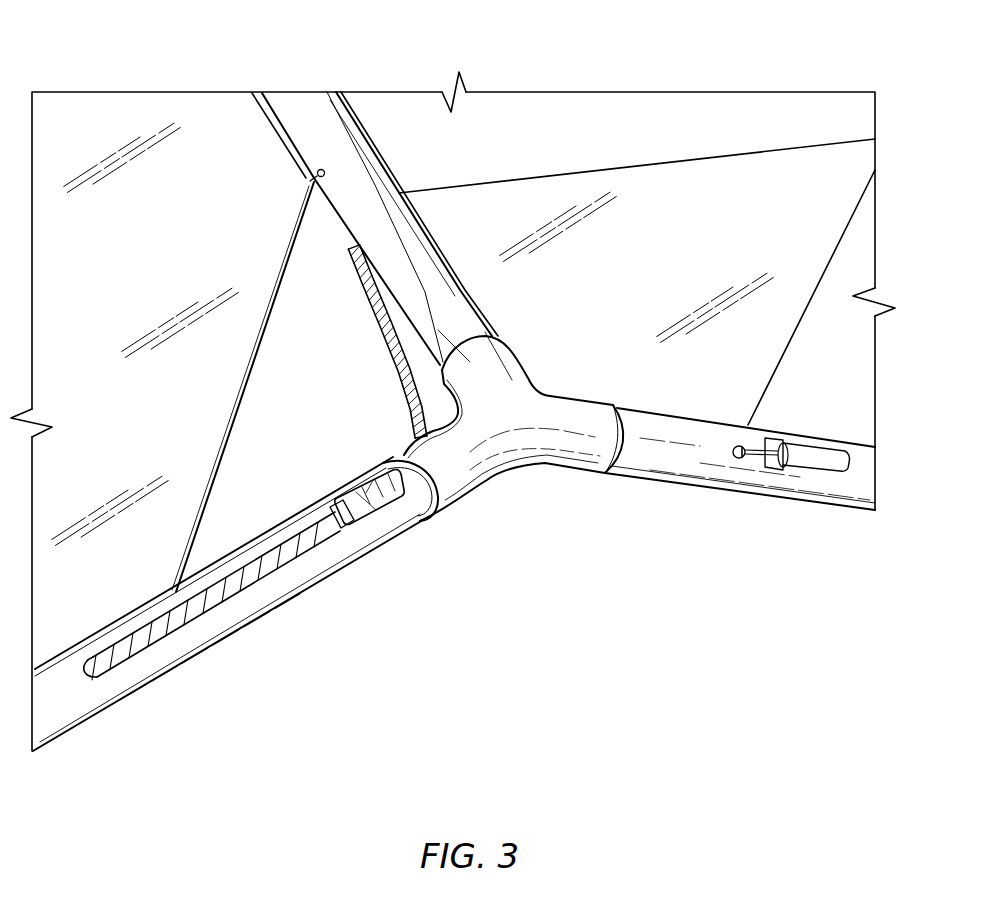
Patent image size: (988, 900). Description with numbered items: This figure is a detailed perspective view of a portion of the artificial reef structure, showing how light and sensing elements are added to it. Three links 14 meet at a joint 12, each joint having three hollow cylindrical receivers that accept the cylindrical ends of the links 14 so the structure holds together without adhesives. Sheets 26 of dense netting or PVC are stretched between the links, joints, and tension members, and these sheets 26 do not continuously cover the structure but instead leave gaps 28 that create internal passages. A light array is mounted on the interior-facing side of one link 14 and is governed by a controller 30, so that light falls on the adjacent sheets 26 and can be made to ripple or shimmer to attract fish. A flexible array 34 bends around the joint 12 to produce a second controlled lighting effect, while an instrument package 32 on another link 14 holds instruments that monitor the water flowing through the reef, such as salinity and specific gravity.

The joint 12 is at (517, 402).
The link 14 is at (346, 170).
The sheet 26 is at (208, 106).
The gap 28 is at (257, 572).
The controller 30 is at (377, 497).
The instrument package 32 is at (795, 455).
The flexible array 34 is at (388, 298).